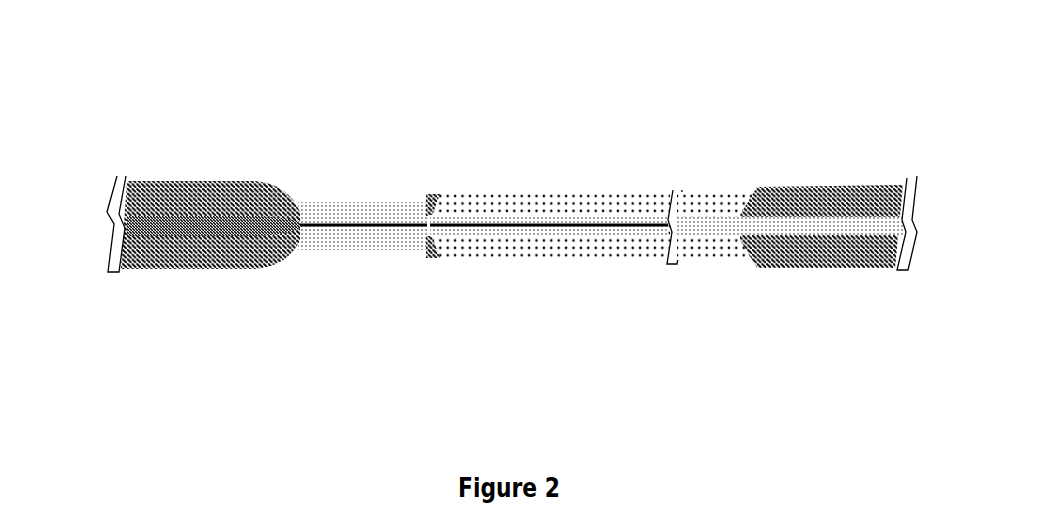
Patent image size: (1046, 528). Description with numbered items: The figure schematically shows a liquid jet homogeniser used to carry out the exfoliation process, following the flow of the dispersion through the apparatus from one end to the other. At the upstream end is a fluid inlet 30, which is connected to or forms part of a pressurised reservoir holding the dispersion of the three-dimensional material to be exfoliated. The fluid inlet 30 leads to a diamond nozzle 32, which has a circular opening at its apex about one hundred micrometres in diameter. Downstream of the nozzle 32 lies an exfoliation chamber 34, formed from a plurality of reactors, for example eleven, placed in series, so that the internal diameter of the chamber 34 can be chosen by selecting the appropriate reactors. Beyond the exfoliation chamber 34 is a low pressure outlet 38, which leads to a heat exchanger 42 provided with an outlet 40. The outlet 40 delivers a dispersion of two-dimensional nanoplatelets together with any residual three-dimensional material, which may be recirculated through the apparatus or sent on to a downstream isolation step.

The fluid inlet 30 is at (110, 201).
The diamond nozzle 32 is at (315, 204).
The exfoliation chamber 34 is at (561, 178).
The low pressure outlet 38 is at (748, 190).
The outlet 40 is at (920, 206).
The heat exchanger 42 is at (831, 190).